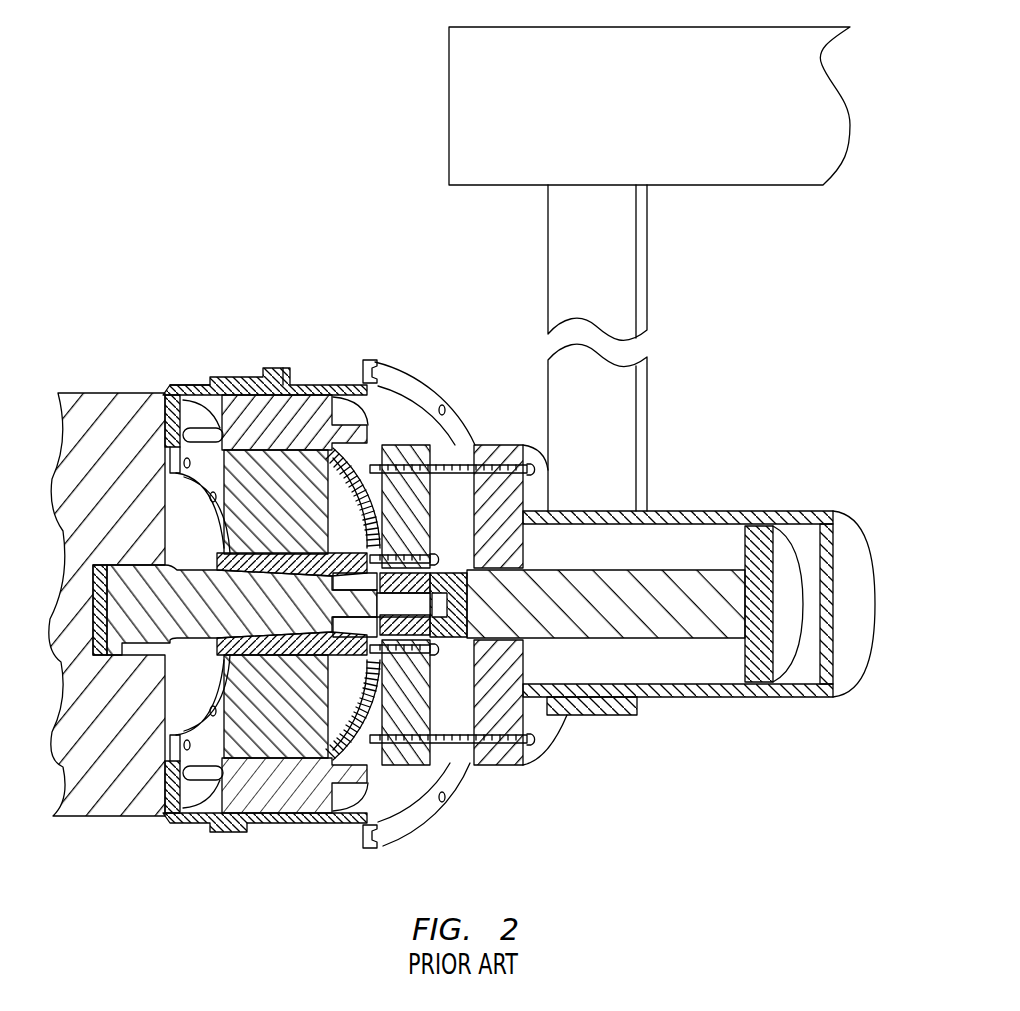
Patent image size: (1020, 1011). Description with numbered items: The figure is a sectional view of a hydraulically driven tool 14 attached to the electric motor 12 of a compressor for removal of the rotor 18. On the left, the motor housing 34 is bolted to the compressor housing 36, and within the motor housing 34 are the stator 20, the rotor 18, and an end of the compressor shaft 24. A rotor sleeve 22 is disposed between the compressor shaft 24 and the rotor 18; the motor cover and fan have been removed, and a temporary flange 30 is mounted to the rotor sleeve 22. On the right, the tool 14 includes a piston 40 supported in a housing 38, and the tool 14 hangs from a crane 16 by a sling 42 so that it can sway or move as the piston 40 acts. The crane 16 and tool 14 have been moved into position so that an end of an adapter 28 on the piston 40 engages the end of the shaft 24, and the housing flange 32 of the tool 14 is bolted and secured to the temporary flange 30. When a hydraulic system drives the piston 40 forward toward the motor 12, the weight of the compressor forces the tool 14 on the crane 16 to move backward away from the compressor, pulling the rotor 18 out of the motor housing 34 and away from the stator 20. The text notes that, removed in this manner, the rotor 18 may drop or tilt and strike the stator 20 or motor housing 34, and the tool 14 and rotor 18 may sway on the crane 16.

The electric motor 12 is at (226, 310).
The hydraulically driven tool 14 is at (590, 742).
The crane 16 is at (752, 211).
The rotor 18 is at (300, 723).
The stator 20 is at (300, 408).
The rotor sleeve 22 is at (277, 643).
The compressor shaft 24 is at (165, 618).
The adapter 28 is at (453, 640).
The temporary flange 30 is at (408, 447).
The housing flange 32 is at (497, 766).
The motor housing 34 is at (183, 389).
The compressor housing 36 is at (112, 393).
The housing 38 is at (735, 511).
The piston 40 is at (674, 640).
The sling 42 is at (648, 292).